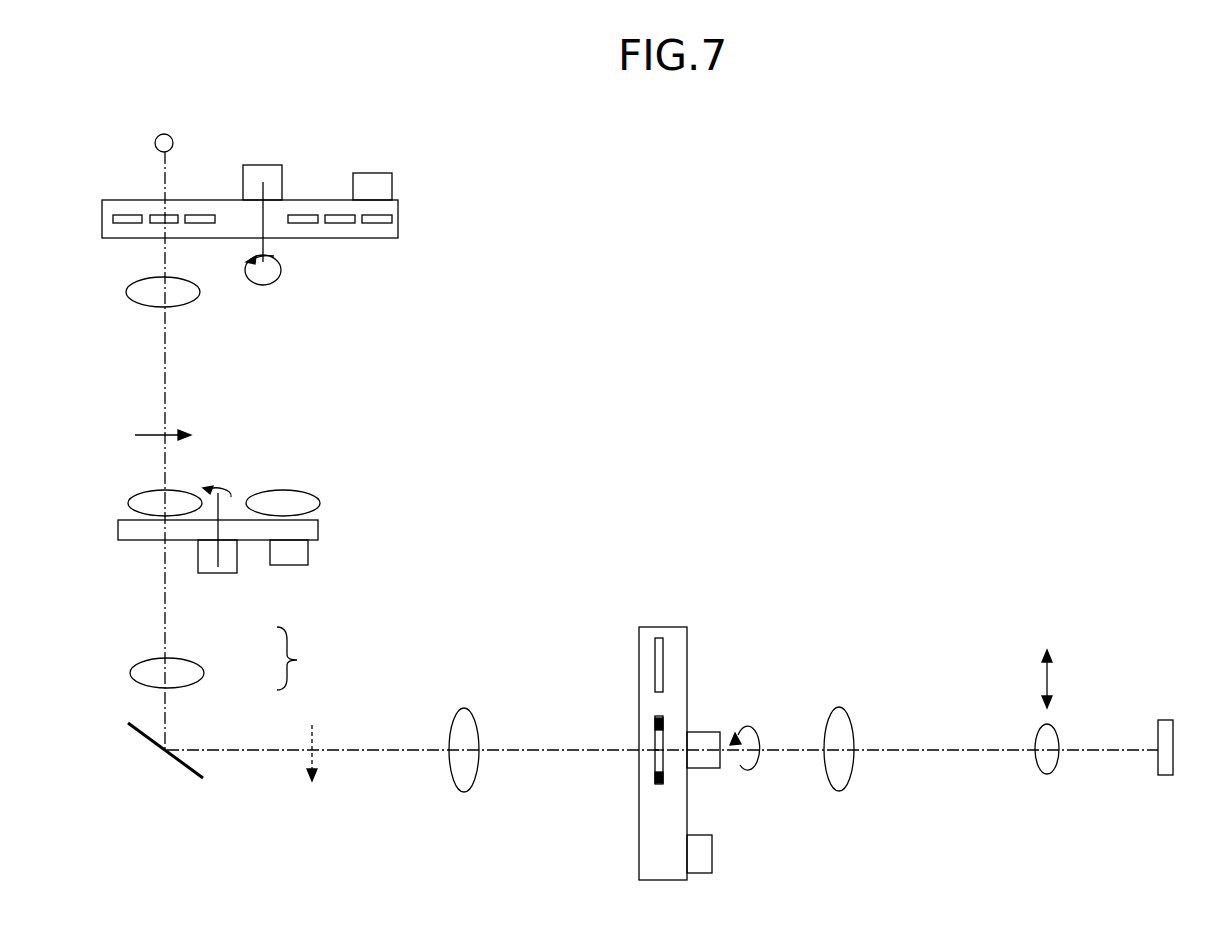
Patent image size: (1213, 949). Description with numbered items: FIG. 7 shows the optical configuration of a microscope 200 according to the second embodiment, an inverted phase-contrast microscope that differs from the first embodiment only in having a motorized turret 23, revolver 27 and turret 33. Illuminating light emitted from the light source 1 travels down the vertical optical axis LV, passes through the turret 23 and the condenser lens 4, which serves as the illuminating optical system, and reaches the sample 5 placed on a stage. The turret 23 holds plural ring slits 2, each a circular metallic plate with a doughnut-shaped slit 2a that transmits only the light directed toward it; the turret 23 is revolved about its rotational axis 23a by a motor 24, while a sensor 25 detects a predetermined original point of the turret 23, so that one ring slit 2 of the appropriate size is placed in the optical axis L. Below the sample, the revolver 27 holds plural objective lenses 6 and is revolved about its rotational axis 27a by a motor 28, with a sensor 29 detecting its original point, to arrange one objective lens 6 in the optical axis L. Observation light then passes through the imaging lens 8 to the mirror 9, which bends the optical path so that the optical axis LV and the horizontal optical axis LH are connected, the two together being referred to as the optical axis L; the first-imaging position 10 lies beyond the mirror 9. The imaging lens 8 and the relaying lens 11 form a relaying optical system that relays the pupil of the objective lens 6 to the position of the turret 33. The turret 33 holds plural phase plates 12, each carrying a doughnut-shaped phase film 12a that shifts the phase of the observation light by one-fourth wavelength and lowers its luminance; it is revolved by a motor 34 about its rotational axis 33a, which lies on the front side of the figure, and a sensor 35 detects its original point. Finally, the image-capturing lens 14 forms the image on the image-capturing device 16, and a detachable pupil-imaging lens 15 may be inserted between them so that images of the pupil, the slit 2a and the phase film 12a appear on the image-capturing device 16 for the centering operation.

The light source 1 is at (165, 133).
The ring slit 2 is at (150, 215).
The slit 2a is at (145, 224).
The condenser lens 4 is at (200, 290).
The sample 5 is at (148, 431).
The objective lens 6 is at (184, 489).
The imaging lens 8 is at (130, 672).
The mirror 9 is at (187, 772).
The first-imaging position 10 is at (316, 756).
The relaying lens 11 is at (463, 792).
The phase plate 12 is at (655, 662).
The phase film 12a is at (663, 774).
The image-capturing lens 14 is at (837, 793).
The pupil-imaging lens 15 is at (1045, 775).
The image-capturing device 16 is at (1163, 777).
The turret 23 is at (399, 217).
The rotational axis 23a is at (282, 261).
The motor 24 is at (260, 165).
The sensor 25 is at (372, 173).
The revolver 27 is at (320, 527).
The rotational axis 27a is at (220, 550).
The motor 28 is at (220, 574).
The sensor 29 is at (310, 550).
The turret 33 is at (663, 880).
The rotational axis 33a is at (648, 748).
The motor 34 is at (702, 732).
The sensor 35 is at (713, 850).
The microscope 200 is at (757, 308).
The optical axis LV is at (167, 642).
The optical axis LH is at (242, 748).
The optical axis L is at (297, 658).